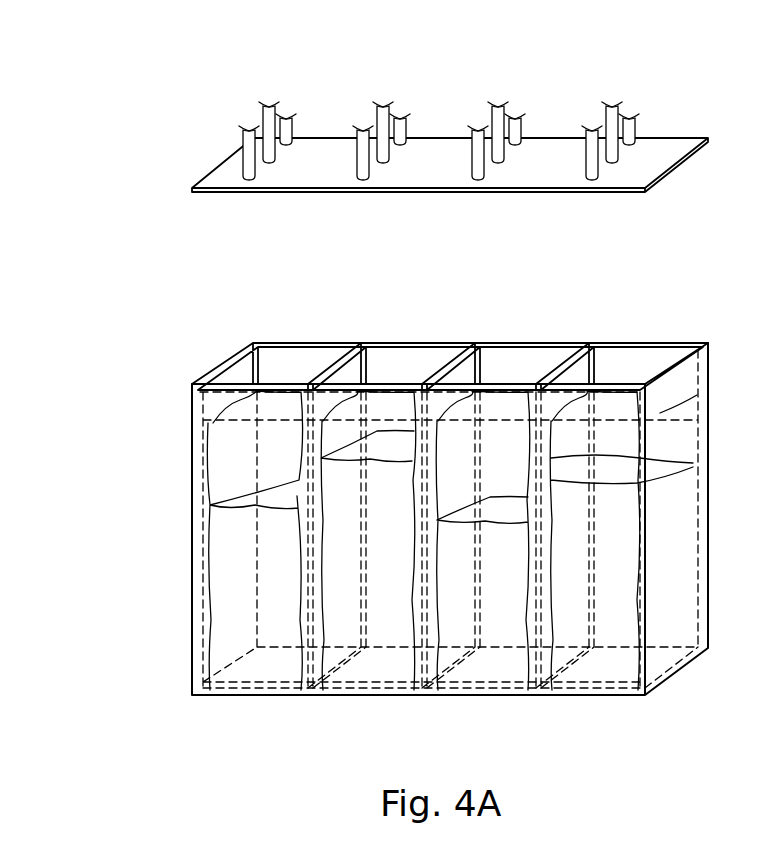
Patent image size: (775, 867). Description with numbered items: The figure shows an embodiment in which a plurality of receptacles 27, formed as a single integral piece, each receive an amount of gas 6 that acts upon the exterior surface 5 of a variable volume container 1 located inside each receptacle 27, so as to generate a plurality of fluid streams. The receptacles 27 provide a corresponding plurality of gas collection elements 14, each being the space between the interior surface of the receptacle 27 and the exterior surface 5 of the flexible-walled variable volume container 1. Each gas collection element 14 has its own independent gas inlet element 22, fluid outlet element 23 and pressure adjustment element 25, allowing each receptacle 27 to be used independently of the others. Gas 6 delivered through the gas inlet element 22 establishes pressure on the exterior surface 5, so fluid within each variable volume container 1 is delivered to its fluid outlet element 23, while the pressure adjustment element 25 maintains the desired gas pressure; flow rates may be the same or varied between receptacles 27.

The variable volume container 1 is at (275, 628).
The exterior surface 5 is at (247, 445).
The amount of gas 6 is at (249, 1).
The gas collection element 14 is at (302, 358).
The gas inlet element 22 is at (291, 128).
The fluid outlet element 23 is at (266, 118).
The pressure adjustment element 25 is at (247, 143).
The receptacle 27 is at (275, 343).